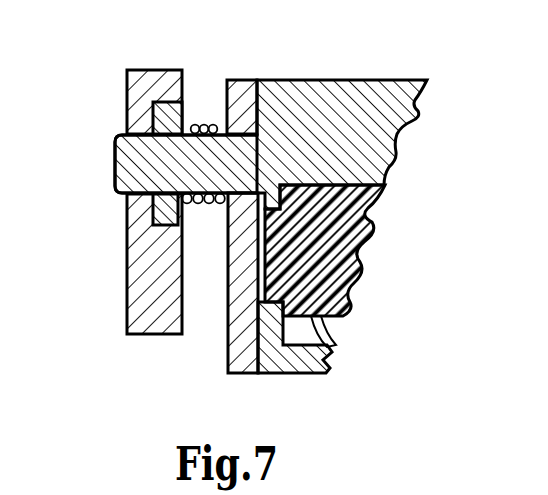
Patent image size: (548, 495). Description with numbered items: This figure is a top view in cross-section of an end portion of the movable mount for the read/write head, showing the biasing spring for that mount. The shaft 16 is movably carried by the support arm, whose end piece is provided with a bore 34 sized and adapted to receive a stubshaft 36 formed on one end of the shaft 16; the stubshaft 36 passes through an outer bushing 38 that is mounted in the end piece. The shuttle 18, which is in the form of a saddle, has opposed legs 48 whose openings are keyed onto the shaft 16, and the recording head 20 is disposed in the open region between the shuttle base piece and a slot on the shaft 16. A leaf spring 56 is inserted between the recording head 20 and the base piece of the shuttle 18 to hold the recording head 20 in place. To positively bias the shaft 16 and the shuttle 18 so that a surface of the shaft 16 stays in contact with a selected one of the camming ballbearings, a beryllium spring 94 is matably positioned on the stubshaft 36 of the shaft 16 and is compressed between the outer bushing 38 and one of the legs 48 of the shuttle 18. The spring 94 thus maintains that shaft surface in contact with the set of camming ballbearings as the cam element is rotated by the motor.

The shaft 16 is at (353, 80).
The shuttle 18 is at (290, 373).
The recording head 20 is at (347, 300).
The bore 34 is at (115, 150).
The stubshaft 36 is at (135, 213).
The outer bushing 38 is at (146, 250).
The legs 48 is at (228, 358).
The leaf spring 56 is at (334, 335).
The beryllium spring 94 is at (202, 127).